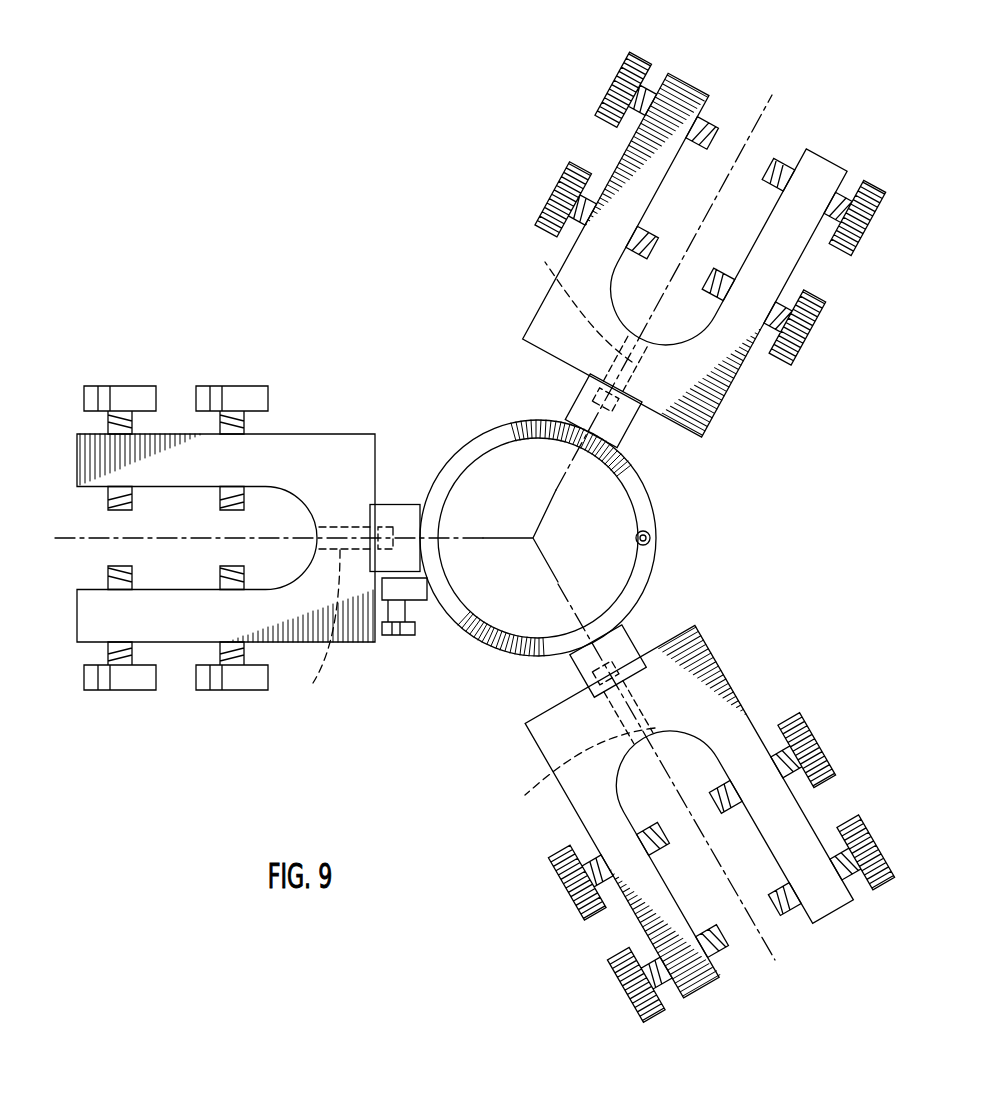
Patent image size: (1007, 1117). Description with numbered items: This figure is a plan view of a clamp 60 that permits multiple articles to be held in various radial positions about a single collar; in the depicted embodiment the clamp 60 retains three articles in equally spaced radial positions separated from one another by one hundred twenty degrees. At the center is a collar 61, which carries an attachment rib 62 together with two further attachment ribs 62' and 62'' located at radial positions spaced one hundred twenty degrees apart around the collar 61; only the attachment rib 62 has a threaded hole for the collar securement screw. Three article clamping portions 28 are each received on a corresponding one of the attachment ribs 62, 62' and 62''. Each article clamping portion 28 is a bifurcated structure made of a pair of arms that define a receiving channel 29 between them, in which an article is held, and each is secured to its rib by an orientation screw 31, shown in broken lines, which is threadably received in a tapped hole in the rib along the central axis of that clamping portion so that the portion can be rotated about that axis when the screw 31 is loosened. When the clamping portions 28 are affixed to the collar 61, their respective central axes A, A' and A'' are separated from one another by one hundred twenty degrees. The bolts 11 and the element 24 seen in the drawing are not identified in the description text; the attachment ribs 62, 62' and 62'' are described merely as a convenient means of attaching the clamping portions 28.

The clamp 60 is at (330, 222).
The collar 61 is at (640, 490).
The attachment rib 62 is at (368, 463).
The attachment rib 62' is at (577, 687).
The attachment rib 62'' is at (564, 379).
The article clamping portion 28 is at (310, 445).
The bolt 11 is at (228, 388).
The clamp bracket 24 is at (397, 637).
The receiving channel 29 is at (140, 557).
The orientation screw 31 is at (468, 523).
The central axis A is at (266, 515).
The central axis A' is at (666, 772).
The central axis A'' is at (664, 292).